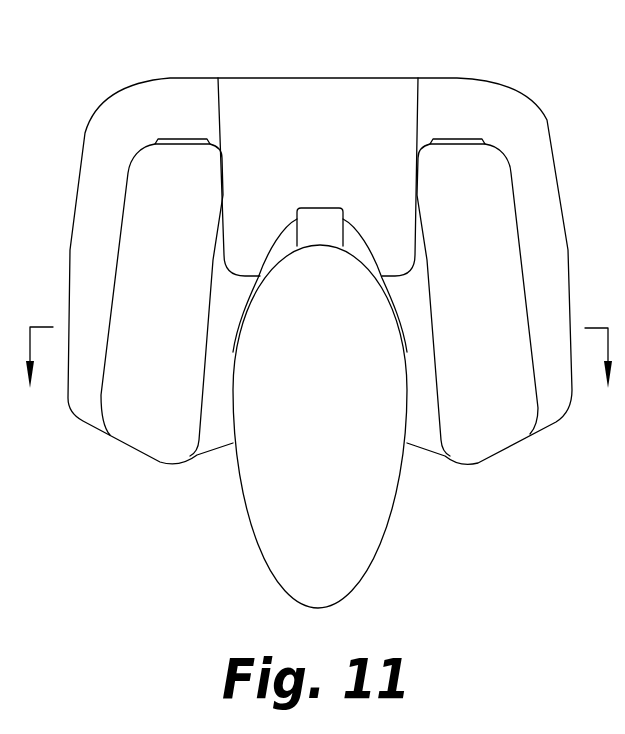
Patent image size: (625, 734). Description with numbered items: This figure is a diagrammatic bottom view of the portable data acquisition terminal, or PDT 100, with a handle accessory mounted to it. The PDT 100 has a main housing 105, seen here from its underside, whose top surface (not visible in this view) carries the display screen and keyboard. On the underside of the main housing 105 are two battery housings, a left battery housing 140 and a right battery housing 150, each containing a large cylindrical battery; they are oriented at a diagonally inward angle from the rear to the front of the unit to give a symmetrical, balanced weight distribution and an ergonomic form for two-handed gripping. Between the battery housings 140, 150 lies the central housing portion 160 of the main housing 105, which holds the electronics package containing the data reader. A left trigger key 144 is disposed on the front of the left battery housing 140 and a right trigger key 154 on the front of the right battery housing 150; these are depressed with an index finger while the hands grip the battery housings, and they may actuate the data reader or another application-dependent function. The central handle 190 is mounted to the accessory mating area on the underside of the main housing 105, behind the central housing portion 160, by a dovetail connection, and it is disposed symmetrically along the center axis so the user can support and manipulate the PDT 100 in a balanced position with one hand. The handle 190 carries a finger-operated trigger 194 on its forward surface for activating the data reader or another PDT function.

The portable data acquisition terminal 100 is at (103, 62).
The main housing 105 is at (532, 98).
The left battery housing 140 is at (493, 201).
The left trigger key 144 is at (465, 137).
The right battery housing 150 is at (143, 207).
The right trigger key 154 is at (182, 137).
The central housing portion 160 is at (352, 97).
The handle 190 is at (259, 552).
The finger-operated trigger 194 is at (318, 216).